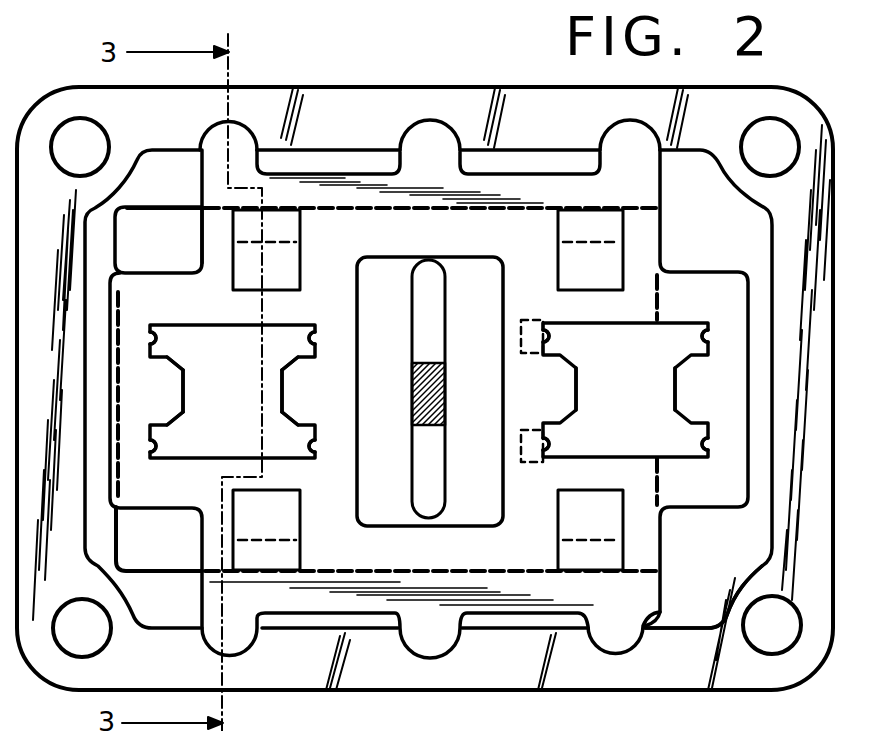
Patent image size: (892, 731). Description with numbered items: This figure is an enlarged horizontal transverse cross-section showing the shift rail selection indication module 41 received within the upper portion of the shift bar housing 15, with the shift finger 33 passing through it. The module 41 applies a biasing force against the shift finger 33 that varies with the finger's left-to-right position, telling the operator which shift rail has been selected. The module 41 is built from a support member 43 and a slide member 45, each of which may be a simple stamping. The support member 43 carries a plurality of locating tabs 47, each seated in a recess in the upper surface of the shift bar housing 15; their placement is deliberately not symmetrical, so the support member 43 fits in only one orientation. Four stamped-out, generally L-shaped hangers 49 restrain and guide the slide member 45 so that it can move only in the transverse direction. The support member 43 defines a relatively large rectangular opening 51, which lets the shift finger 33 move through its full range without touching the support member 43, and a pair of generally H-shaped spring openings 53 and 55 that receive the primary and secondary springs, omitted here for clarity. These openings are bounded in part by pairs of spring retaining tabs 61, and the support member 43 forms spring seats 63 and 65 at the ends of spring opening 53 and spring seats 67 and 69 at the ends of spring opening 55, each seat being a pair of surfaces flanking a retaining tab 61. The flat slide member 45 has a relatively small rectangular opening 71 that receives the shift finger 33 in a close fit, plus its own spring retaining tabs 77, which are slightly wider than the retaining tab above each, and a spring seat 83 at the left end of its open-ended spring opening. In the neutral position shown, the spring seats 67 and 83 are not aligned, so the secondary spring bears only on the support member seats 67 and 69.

The shift bar housing 15 is at (687, 657).
The shift finger 33 is at (427, 367).
The shift rail selection indication module 41 is at (688, 258).
The support member 43 is at (693, 478).
The slide member 45 is at (163, 247).
The locating tabs 47 is at (427, 147).
The hangers 49 is at (580, 253).
The rectangular opening 51 is at (503, 480).
The spring opening 53 is at (232, 348).
The spring opening 55 is at (640, 348).
The spring retaining tabs 61 is at (282, 388).
The spring seat 63 is at (150, 445).
The spring seat 65 is at (317, 447).
The spring seat 67 is at (563, 424).
The spring seat 69 is at (710, 445).
The rectangular opening 71 is at (440, 323).
The spring retaining tabs 77 is at (283, 425).
The spring seat 83 is at (530, 490).